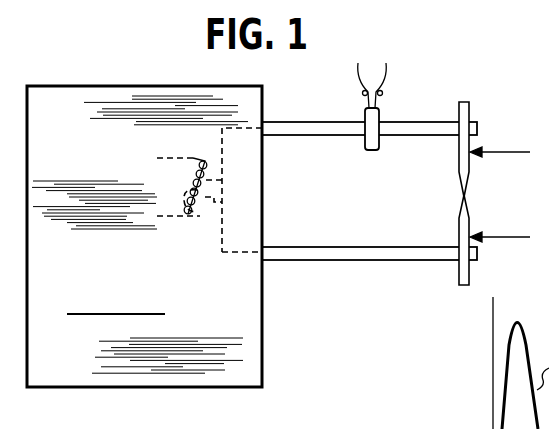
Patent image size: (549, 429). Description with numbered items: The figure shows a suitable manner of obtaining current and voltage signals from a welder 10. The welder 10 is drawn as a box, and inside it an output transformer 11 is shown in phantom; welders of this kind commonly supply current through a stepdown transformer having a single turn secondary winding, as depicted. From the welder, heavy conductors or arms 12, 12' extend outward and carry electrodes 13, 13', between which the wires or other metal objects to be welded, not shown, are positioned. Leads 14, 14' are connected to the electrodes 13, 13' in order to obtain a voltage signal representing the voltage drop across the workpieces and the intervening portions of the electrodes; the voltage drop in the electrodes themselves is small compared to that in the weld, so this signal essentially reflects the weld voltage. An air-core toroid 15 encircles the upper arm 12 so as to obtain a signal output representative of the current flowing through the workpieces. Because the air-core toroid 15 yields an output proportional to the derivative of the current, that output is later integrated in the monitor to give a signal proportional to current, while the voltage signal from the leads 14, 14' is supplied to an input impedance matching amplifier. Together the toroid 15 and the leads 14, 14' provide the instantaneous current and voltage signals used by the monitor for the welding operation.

The welder 10 is at (263, 322).
The output transformer 11 is at (193, 157).
The arm 12 is at (369, 145).
The arm 12' is at (369, 239).
The electrode 13 is at (446, 149).
The electrode 13' is at (442, 240).
The lead 14 is at (501, 138).
The lead 14' is at (500, 225).
The air-core toroid 15 is at (372, 150).